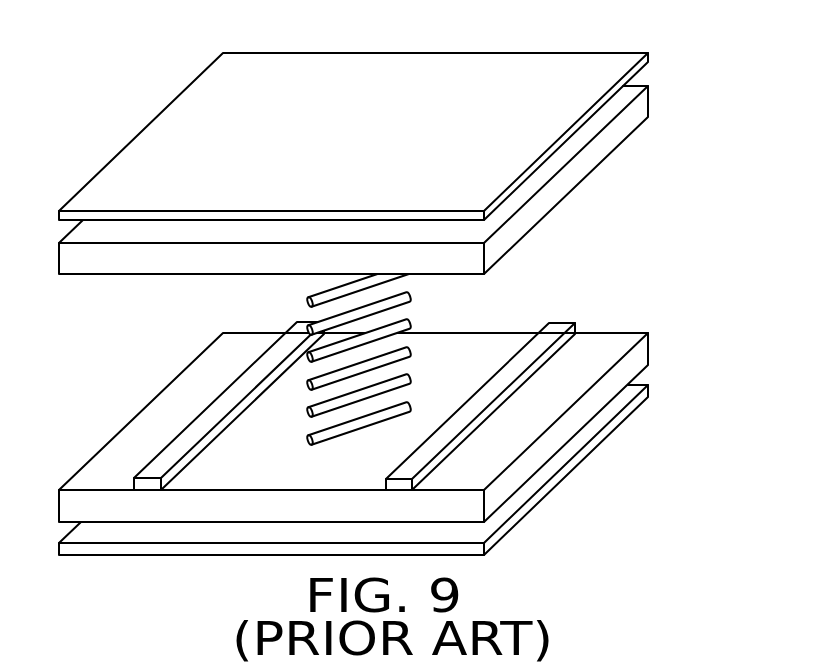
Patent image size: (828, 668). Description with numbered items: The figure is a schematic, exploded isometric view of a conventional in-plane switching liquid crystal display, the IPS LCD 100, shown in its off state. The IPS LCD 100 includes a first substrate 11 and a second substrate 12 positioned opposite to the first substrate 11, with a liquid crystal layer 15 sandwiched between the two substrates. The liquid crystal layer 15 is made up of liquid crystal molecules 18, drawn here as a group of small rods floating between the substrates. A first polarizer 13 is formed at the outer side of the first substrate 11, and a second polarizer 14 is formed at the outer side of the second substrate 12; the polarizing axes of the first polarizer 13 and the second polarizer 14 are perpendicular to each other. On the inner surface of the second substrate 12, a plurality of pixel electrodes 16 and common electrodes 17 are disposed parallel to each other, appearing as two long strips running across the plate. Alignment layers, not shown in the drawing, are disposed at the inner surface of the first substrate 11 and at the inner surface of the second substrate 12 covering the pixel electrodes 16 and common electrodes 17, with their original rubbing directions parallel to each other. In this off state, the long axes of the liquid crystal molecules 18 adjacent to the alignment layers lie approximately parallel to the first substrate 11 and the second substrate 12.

The IPS LCD 100 is at (321, 42).
The first substrate 11 is at (607, 143).
The second substrate 12 is at (635, 360).
The first polarizer 13 is at (599, 72).
The second polarizer 14 is at (647, 397).
The liquid crystal layer 15 is at (76, 284).
The pixel electrodes 16 is at (157, 472).
The common electrodes 17 is at (553, 330).
The liquid crystal molecules 18 is at (405, 325).